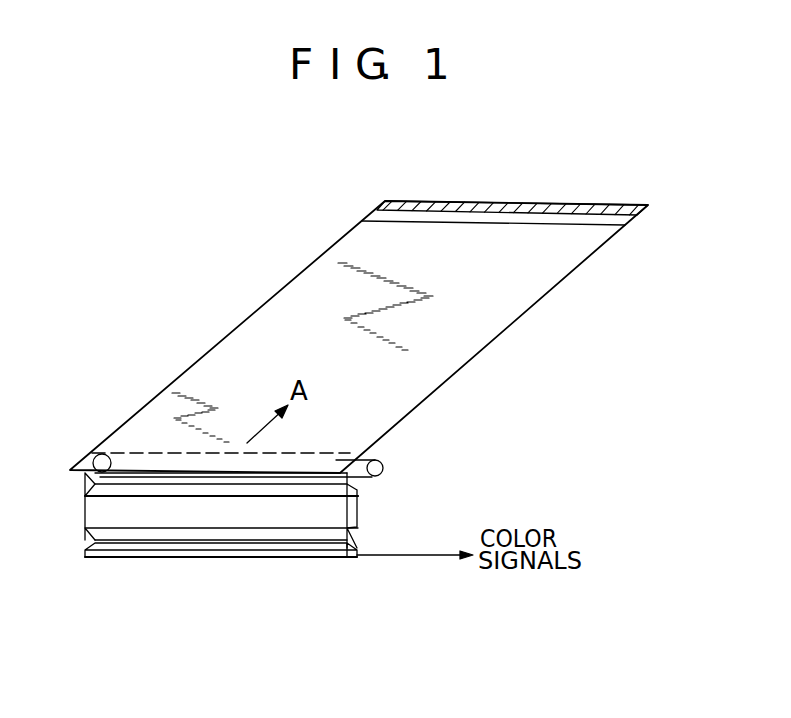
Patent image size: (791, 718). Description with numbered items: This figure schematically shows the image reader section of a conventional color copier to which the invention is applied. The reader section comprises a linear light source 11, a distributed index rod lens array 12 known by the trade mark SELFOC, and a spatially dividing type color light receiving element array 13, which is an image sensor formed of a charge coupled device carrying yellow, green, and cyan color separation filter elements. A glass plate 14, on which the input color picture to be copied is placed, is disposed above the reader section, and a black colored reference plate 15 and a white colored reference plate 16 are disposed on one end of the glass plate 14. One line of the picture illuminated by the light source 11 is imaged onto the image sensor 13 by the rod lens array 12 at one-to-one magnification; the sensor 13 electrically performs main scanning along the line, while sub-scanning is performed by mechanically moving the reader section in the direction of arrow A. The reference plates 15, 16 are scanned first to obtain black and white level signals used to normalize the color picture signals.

The linear light source 11 is at (383, 466).
The distributed index rod lens array 12 is at (358, 507).
The spatially dividing type color light receiving element array 13 is at (145, 558).
The glass plate 14 is at (487, 347).
The black colored reference plate 15 is at (376, 205).
The white colored reference plate 16 is at (365, 221).